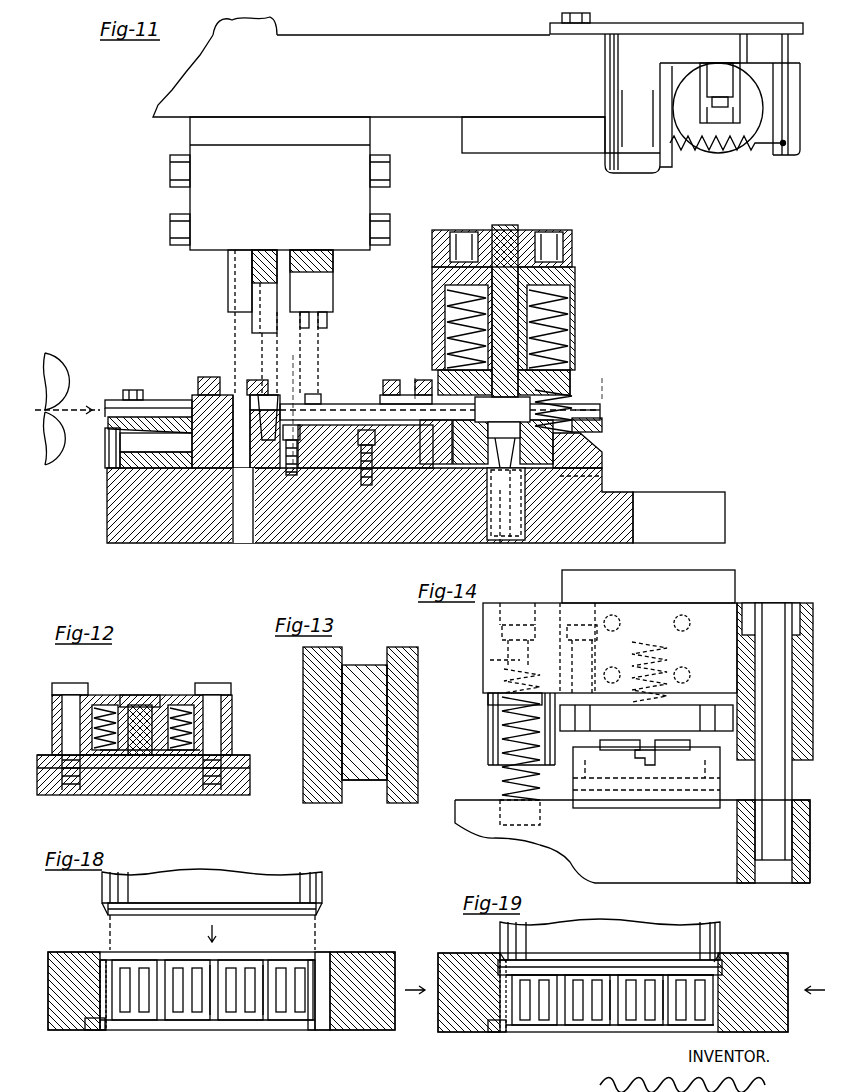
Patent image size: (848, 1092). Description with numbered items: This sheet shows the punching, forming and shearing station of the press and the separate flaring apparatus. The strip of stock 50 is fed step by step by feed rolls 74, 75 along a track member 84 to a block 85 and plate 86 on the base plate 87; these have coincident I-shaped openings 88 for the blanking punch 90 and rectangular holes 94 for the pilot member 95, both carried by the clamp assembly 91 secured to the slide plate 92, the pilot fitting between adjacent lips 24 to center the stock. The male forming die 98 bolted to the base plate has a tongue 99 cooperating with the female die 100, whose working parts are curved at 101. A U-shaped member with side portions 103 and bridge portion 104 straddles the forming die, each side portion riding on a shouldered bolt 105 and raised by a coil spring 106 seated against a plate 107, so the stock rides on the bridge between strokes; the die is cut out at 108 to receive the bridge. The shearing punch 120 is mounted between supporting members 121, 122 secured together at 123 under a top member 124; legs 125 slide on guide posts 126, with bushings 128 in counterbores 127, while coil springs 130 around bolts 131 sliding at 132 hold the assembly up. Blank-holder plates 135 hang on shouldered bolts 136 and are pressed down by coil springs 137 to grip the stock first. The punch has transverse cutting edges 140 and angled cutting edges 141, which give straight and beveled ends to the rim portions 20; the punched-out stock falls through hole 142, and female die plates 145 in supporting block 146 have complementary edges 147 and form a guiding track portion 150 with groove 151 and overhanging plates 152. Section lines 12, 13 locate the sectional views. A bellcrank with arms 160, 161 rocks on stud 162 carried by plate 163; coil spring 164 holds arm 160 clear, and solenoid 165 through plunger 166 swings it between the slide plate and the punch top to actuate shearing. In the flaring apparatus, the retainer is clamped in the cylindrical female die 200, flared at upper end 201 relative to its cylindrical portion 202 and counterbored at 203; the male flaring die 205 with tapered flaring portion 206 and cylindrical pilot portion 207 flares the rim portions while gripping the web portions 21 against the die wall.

In FIG. 11, the plate 92 is at (160, 108).
In FIG. 11, the clamp assembly 91 is at (197, 205).
In FIG. 11, the punch 90 is at (232, 286).
In FIG. 11, the pilot member 95 is at (265, 323).
In FIG. 11, the rectangular holes 94 is at (260, 395).
In FIG. 11, the I-shaped openings 88 is at (238, 395).
In FIG. 11, the plate 86 is at (200, 395).
In FIG. 11, the upper feed roll 75 is at (55, 365).
In FIG. 11, the feed roll 74 is at (48, 470).
In FIG. 11, the strip of stock 50 is at (94, 405).
In FIG. 11, the track member 84 is at (108, 428).
In FIG. 11, the base plate 87 is at (107, 537).
In FIG. 12, the base plate 87 is at (238, 792).
In FIG. 11, the block 85 is at (205, 455).
In FIG. 11, the cut out 108 is at (272, 475).
In FIG. 11, the side portions 103 is at (350, 458).
In FIG. 12, the side portions 103 is at (98, 700).
In FIG. 11, the die plates 145 is at (420, 530).
In FIG. 11, the female die 100 is at (322, 295).
In FIG. 11, the curved working parts 101 is at (314, 330).
In FIG. 11, the bridge portion 104 is at (310, 394).
In FIG. 12, the bridge portion 104 is at (152, 700).
In FIG. 11, the tongue 99 is at (320, 400).
In FIG. 12, the tongue 99 is at (138, 700).
In FIG. 11, the male forming die 98 is at (335, 404).
In FIG. 12, the male forming die 98 is at (150, 770).
In FIG. 11, the plates 152 is at (380, 398).
In FIG. 14, the plates 152 is at (615, 750).
In FIG. 11, the shearing punch 120 is at (500, 265).
In FIG. 13, the shearing punch 120 is at (362, 785).
In FIG. 14, the shearing punch 120 is at (646, 718).
In FIG. 11, the top member 124 is at (568, 248).
In FIG. 14, the top member 124 is at (690, 578).
In FIG. 11, the supporting member 122 is at (438, 283).
In FIG. 14, the supporting member 122 is at (560, 615).
In FIG. 11, the coil spring 137 is at (445, 305).
In FIG. 14, the coil spring 137 is at (648, 636).
In FIG. 11, the plates 135 is at (440, 372).
In FIG. 13, the plates 135 is at (322, 805).
In FIG. 14, the plates 135 is at (567, 715).
In FIG. 11, the supporting member 121 is at (575, 305).
In FIG. 14, the supporting member 121 is at (483, 612).
In FIG. 11, the legs 125 is at (570, 378).
In FIG. 14, the legs 125 is at (490, 726).
In FIG. 11, the coil spring 130 is at (540, 400).
In FIG. 14, the coil spring 130 is at (502, 745).
In FIG. 11, the groove 151 is at (577, 420).
In FIG. 14, the groove 151 is at (650, 766).
In FIG. 11, the supporting block 146 is at (603, 450).
In FIG. 11, the bolt 131 is at (602, 476).
In FIG. 14, the bolt 131 is at (498, 768).
In FIG. 11, the complementary edges 147 is at (502, 468).
In FIG. 11, the guide posts 126 is at (500, 548).
In FIG. 14, the guide posts 126 is at (500, 792).
In FIG. 11, the hole 142 is at (515, 538).
In FIG. 11, the lever arm 160 is at (548, 148).
In FIG. 11, the lever arm 161 is at (702, 40).
In FIG. 11, the stud 162 is at (640, 163).
In FIG. 11, the plate 163 is at (630, 30).
In FIG. 11, the coil spring 164 is at (710, 152).
In FIG. 11, the solenoid 165 is at (758, 103).
In FIG. 11, the plunger 166 is at (753, 153).
In FIG. 11, the section line 12— 12 is at (296, 501).
In FIG. 11, the section line 13— 13 is at (605, 389).
In FIG. 12, the shouldered bolt 105 is at (75, 692).
In FIG. 12, the coil spring 106 is at (178, 708).
In FIG. 12, the plate 107 is at (238, 752).
In FIG. 13, the cutting edges 141 is at (312, 690).
In FIG. 14, the cutting edges 141 is at (480, 672).
In FIG. 13, the cutting edges 140 is at (366, 672).
In FIG. 14, the sliding fit 132 is at (502, 652).
In FIG. 14, the shouldered bolts 136 is at (650, 649).
In FIG. 14, the bushings 128 is at (748, 628).
In FIG. 14, the counterbore 127 is at (790, 595).
In FIG. 14, the bolts 123 is at (598, 620).
In FIG. 14, the guiding track portion 150 is at (680, 748).
In FIG. 18, the male flaring die 205 is at (320, 882).
In FIG. 19, the male flaring die 205 is at (670, 922).
In FIG. 18, the tapered flaring portion 206 is at (100, 898).
In FIG. 19, the tapered flaring portion 206 is at (702, 955).
In FIG. 18, the cylindrical pilot portion 207 is at (106, 912).
In FIG. 19, the cylindrical pilot portion 207 is at (625, 958).
In FIG. 18, the flared upper end 201 is at (325, 950).
In FIG. 18, the web portions 21 is at (340, 985).
In FIG. 19, the web portions 21 is at (510, 1000).
In FIG. 18, the rim portions 20 is at (108, 952).
In FIG. 19, the rim portions 20 is at (515, 960).
In FIG. 18, the counterbore 203 is at (90, 1030).
In FIG. 19, the counterbore 203 is at (493, 1032).
In FIG. 18, the cylindrical portion 202 is at (106, 1030).
In FIG. 18, the lips 24 is at (240, 1005).
In FIG. 19, the lips 24 is at (582, 1000).
In FIG. 18, the cylindrical female die 200 is at (370, 1025).
In FIG. 19, the cylindrical female die 200 is at (462, 1030).